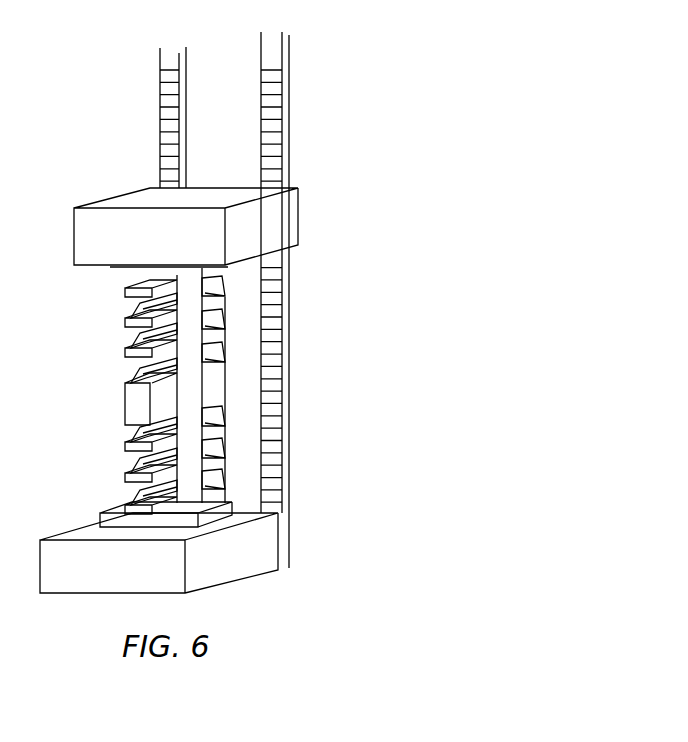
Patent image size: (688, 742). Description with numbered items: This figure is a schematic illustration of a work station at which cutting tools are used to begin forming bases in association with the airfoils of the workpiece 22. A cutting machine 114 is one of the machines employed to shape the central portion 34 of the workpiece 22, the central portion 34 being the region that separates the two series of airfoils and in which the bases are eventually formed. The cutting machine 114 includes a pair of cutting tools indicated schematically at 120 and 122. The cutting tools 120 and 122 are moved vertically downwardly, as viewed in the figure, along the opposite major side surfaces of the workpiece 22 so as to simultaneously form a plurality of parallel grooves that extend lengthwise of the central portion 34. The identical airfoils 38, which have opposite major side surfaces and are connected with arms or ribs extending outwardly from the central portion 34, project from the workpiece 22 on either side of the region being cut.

The cutting machine 114 is at (304, 109).
The cutting tool 120 is at (110, 268).
The cutting tool 122 is at (258, 265).
The central portion 34 is at (192, 292).
The workpiece 22 is at (122, 409).
The airfoil 38 is at (132, 373).